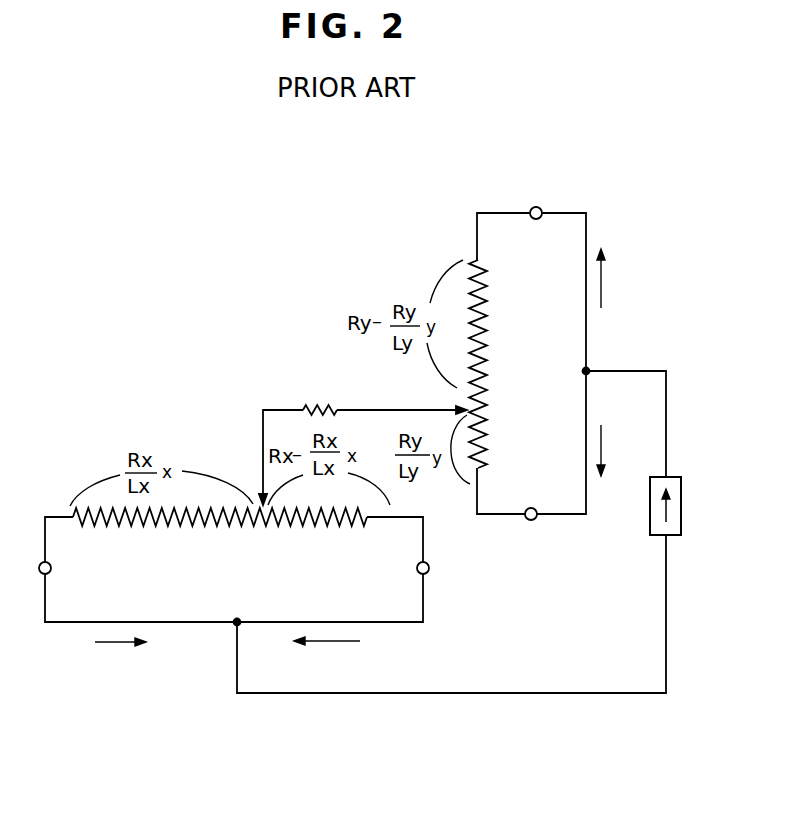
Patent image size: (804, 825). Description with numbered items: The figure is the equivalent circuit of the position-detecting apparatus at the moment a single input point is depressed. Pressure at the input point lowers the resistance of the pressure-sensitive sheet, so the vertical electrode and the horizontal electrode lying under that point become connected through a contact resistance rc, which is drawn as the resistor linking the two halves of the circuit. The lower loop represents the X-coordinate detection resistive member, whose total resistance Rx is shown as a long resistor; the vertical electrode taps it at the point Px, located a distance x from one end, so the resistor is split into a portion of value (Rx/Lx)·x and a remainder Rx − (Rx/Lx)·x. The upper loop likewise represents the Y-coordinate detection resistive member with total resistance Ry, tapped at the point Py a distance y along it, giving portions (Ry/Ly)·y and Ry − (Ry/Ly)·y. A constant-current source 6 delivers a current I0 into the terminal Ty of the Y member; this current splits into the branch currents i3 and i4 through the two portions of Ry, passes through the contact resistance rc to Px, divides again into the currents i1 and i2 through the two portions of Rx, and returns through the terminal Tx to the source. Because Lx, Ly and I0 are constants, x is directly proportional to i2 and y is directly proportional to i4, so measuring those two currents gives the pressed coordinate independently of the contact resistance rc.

The constant-current source 6 is at (675, 475).
The total resistance of the X-coordinate detection resistive member Rx is at (373, 525).
The total resistance of the Y-coordinate detection resistive member Ry is at (490, 487).
The connection point on the X-coordinate detection resistive member Px is at (267, 543).
The connection point on the Y-coordinate detection resistive member Py is at (504, 413).
The contact resistance rc is at (363, 441).
The X terminal Tx is at (221, 636).
The Y terminal Ty is at (599, 356).
The current value of the constant-current source I0 is at (681, 505).
The current i1 is at (120, 655).
The current i2 is at (327, 654).
The current i3 is at (611, 450).
The current i4 is at (612, 278).